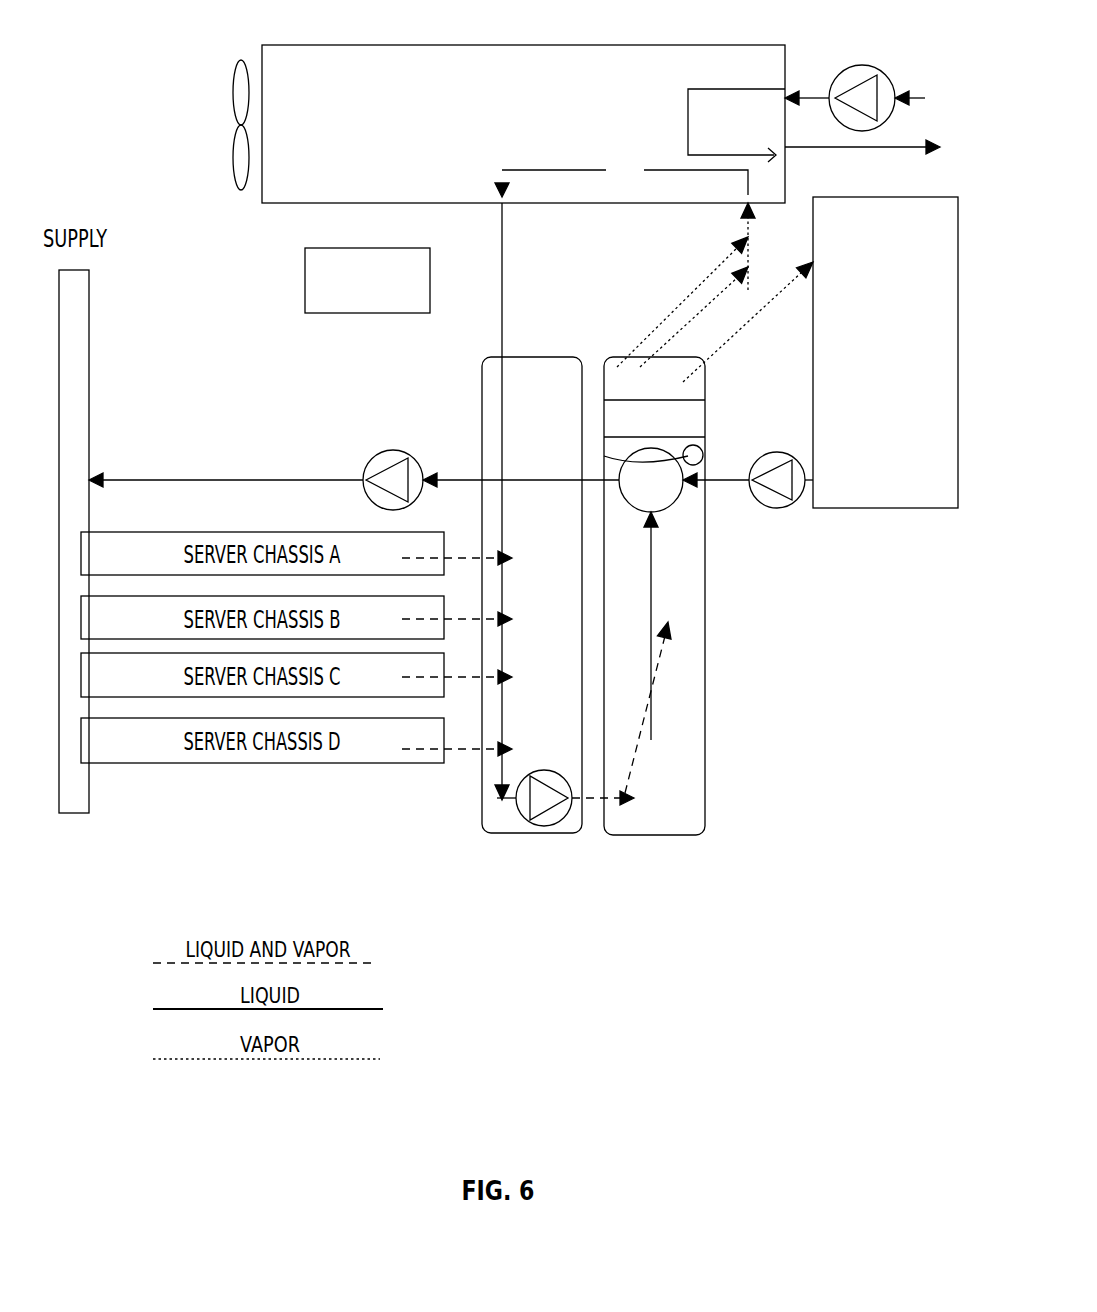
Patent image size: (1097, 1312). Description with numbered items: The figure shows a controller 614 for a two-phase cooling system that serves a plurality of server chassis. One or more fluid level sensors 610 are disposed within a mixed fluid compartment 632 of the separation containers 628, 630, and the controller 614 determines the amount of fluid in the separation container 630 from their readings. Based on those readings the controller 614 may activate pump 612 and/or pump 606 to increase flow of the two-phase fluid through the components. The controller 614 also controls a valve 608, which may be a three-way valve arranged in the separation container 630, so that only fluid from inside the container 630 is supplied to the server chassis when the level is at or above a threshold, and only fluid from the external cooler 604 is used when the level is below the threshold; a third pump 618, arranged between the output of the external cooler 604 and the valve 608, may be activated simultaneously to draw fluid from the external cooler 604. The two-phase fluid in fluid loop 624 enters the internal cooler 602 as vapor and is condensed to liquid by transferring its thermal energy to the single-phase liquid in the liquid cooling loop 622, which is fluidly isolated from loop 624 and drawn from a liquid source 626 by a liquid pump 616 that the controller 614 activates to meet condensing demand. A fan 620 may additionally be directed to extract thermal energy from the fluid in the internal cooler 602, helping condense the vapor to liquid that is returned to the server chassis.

The internal cooler 602 is at (626, 141).
The external cooler 604 is at (940, 382).
The pump 606 is at (395, 451).
The valve 608 is at (635, 490).
The fluid level sensor 610 is at (703, 453).
The pump 612 is at (548, 771).
The controller 614 is at (351, 309).
The liquid pump 616 is at (857, 66).
The third pump 618 is at (777, 508).
The fan 620 is at (225, 32).
The liquid cooling loop 622 is at (717, 133).
The fluid loop 624 is at (608, 185).
The liquid source 626 is at (928, 132).
The separation container 628 is at (517, 875).
The separation container 630 is at (638, 876).
The mixed fluid compartment 632 is at (690, 660).